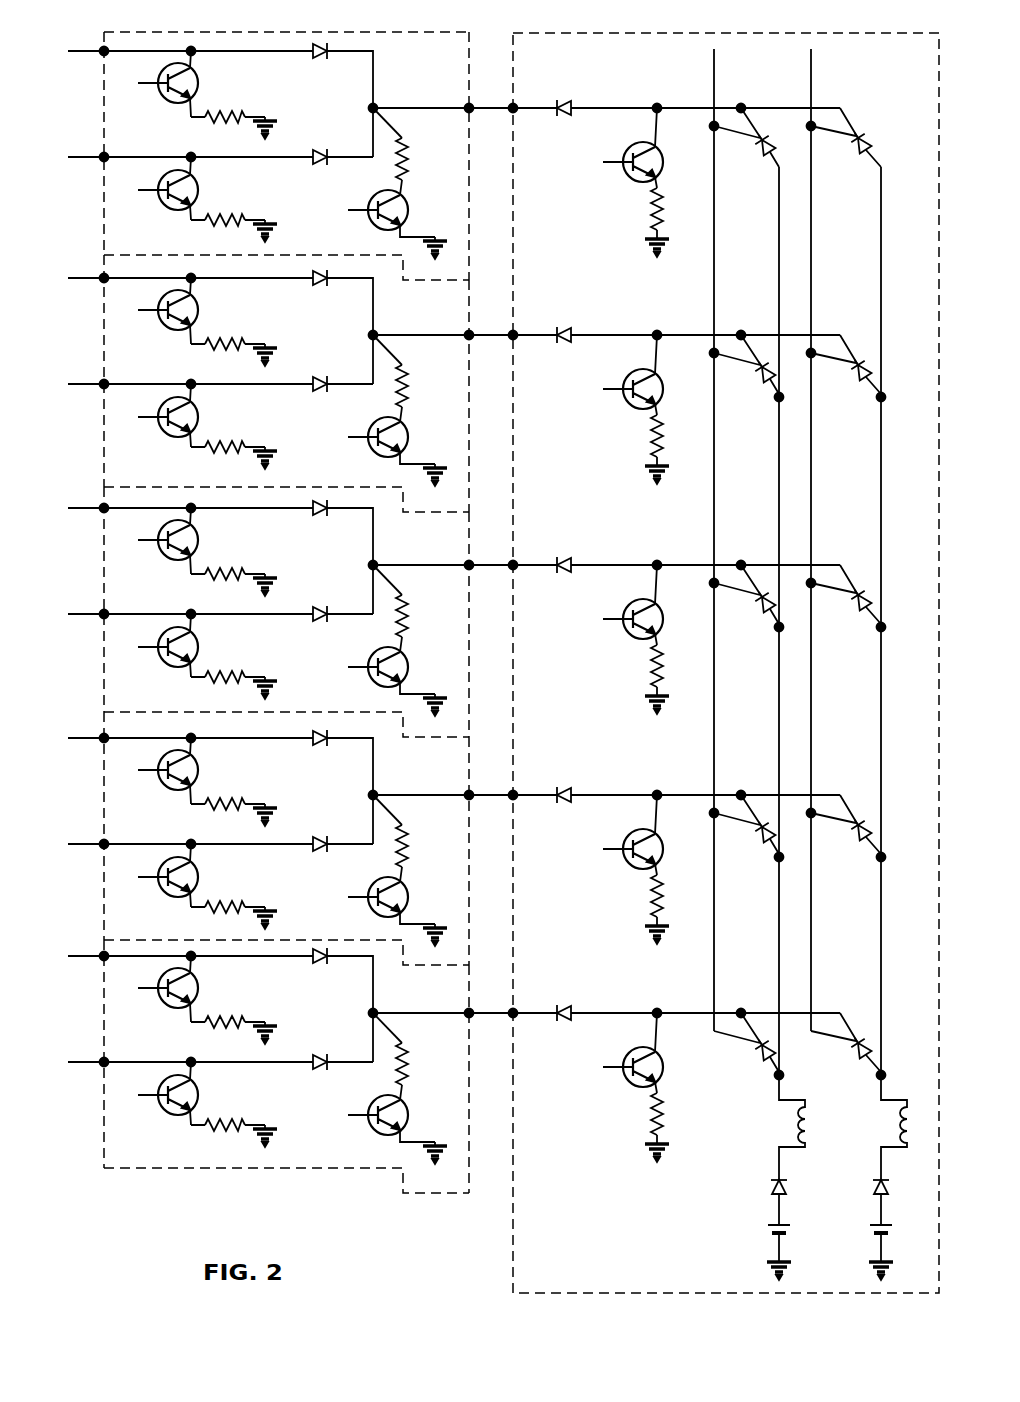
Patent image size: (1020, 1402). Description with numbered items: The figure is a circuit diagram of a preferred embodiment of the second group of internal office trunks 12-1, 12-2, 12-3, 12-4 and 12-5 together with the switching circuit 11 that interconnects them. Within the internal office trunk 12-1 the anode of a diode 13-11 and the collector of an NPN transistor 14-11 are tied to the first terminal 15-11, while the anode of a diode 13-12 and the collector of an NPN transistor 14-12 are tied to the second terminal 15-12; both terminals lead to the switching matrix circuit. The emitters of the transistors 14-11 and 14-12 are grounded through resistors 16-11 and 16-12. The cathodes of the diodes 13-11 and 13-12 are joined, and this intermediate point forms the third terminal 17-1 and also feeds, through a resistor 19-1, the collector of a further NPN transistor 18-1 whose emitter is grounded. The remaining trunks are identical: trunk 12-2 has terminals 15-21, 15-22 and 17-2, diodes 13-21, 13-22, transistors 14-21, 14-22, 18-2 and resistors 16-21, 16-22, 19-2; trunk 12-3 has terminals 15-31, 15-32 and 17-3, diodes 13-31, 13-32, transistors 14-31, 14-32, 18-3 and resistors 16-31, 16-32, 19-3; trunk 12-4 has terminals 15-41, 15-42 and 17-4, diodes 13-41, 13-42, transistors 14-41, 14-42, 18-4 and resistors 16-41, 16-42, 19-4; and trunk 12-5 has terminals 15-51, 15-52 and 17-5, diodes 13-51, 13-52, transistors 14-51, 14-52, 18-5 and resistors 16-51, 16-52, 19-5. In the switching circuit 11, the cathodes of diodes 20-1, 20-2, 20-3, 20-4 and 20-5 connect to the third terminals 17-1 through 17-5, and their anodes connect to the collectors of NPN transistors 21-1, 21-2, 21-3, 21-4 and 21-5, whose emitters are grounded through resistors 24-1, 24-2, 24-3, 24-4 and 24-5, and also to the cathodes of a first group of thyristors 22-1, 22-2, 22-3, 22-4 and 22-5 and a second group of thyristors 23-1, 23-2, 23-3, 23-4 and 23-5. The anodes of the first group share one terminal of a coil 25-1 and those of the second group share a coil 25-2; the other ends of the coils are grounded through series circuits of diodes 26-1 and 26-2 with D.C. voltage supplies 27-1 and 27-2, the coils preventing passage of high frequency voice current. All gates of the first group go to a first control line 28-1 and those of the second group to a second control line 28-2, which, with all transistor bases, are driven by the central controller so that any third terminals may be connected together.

The switching circuit 11 is at (579, 30).
The internal office trunk 12-1 is at (472, 86).
The internal office trunk 12-2 is at (472, 317).
The internal office trunk 12-3 is at (472, 547).
The internal office trunk 12-4 is at (472, 777).
The internal office trunk 12-5 is at (472, 995).
The diode 13-11 is at (320, 59).
The diode 13-12 is at (320, 149).
The diode 13-21 is at (320, 286).
The diode 13-22 is at (320, 376).
The diode 13-31 is at (320, 516).
The diode 13-32 is at (320, 606).
The diode 13-41 is at (320, 746).
The diode 13-42 is at (320, 836).
The diode 13-51 is at (320, 964).
The diode 13-52 is at (320, 1054).
The NPN transistor 14-11 is at (196, 70).
The NPN transistor 14-12 is at (196, 177).
The NPN transistor 14-21 is at (196, 297).
The NPN transistor 14-22 is at (196, 404).
The NPN transistor 14-31 is at (196, 527).
The NPN transistor 14-32 is at (196, 634).
The NPN transistor 14-41 is at (196, 757).
The NPN transistor 14-42 is at (196, 864).
The NPN transistor 14-51 is at (196, 975).
The NPN transistor 14-52 is at (196, 1082).
The first terminal 15-11 is at (104, 51).
The second terminal 15-12 is at (104, 157).
The first terminal 15-21 is at (104, 278).
The second terminal 15-22 is at (104, 384).
The first terminal 15-31 is at (104, 508).
The second terminal 15-32 is at (104, 614).
The first terminal 15-41 is at (104, 738).
The second terminal 15-42 is at (104, 844).
The first terminal 15-51 is at (104, 956).
The second terminal 15-52 is at (104, 1062).
The resistor 16-11 is at (226, 122).
The resistor 16-12 is at (226, 224).
The resistor 16-21 is at (226, 349).
The resistor 16-22 is at (226, 451).
The resistor 16-31 is at (226, 579).
The resistor 16-32 is at (226, 681).
The resistor 16-41 is at (226, 809).
The resistor 16-42 is at (226, 911).
The resistor 16-51 is at (226, 1027).
The resistor 16-52 is at (226, 1129).
The third terminal 17-1 is at (470, 111).
The third terminal 17-2 is at (470, 338).
The third terminal 17-3 is at (470, 568).
The third terminal 17-4 is at (470, 798).
The third terminal 17-5 is at (470, 1016).
The NPN transistor 18-1 is at (409, 208).
The NPN transistor 18-2 is at (409, 435).
The NPN transistor 18-3 is at (409, 665).
The NPN transistor 18-4 is at (409, 895).
The NPN transistor 18-5 is at (409, 1113).
The resistor 19-1 is at (407, 164).
The resistor 19-2 is at (407, 391).
The resistor 19-3 is at (407, 621).
The resistor 19-4 is at (407, 851).
The resistor 19-5 is at (407, 1069).
The diode 20-1 is at (563, 99).
The diode 20-2 is at (563, 326).
The diode 20-3 is at (563, 556).
The diode 20-4 is at (563, 786).
The diode 20-5 is at (563, 1004).
The NPN transistor 21-1 is at (630, 153).
The NPN transistor 21-2 is at (630, 380).
The NPN transistor 21-3 is at (630, 610).
The NPN transistor 21-4 is at (630, 840).
The NPN transistor 21-5 is at (630, 1058).
The thyristor 22-1 is at (760, 159).
The thyristor 22-2 is at (760, 386).
The thyristor 22-3 is at (760, 616).
The thyristor 22-4 is at (760, 846).
The thyristor 22-5 is at (750, 1051).
The thyristor 23-1 is at (861, 159).
The thyristor 23-2 is at (861, 386).
The thyristor 23-3 is at (861, 616).
The thyristor 23-4 is at (861, 846).
The thyristor 23-5 is at (853, 1051).
The resistor 24-1 is at (650, 205).
The resistor 24-2 is at (650, 432).
The resistor 24-3 is at (650, 662).
The resistor 24-4 is at (650, 892).
The resistor 24-5 is at (650, 1110).
The coil 25-1 is at (797, 1133).
The coil 25-2 is at (901, 1133).
The diode 26-1 is at (770, 1186).
The diode 26-2 is at (874, 1186).
The D.C. voltage supply 27-1 is at (768, 1226).
The D.C. voltage supply 27-2 is at (884, 1226).
The first control line 28-1 is at (712, 50).
The second control line 28-2 is at (810, 62).